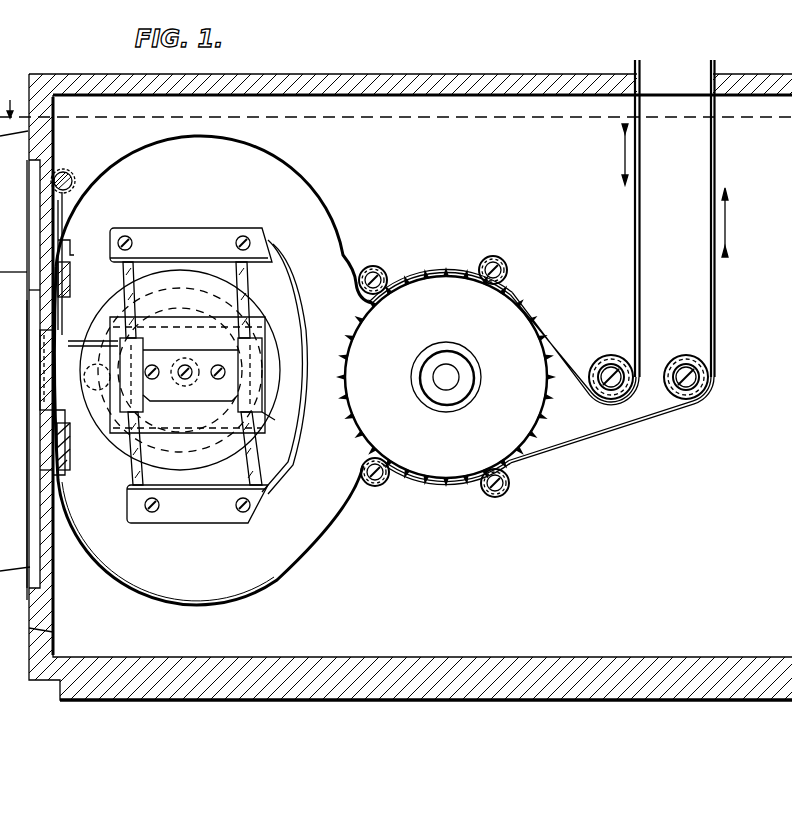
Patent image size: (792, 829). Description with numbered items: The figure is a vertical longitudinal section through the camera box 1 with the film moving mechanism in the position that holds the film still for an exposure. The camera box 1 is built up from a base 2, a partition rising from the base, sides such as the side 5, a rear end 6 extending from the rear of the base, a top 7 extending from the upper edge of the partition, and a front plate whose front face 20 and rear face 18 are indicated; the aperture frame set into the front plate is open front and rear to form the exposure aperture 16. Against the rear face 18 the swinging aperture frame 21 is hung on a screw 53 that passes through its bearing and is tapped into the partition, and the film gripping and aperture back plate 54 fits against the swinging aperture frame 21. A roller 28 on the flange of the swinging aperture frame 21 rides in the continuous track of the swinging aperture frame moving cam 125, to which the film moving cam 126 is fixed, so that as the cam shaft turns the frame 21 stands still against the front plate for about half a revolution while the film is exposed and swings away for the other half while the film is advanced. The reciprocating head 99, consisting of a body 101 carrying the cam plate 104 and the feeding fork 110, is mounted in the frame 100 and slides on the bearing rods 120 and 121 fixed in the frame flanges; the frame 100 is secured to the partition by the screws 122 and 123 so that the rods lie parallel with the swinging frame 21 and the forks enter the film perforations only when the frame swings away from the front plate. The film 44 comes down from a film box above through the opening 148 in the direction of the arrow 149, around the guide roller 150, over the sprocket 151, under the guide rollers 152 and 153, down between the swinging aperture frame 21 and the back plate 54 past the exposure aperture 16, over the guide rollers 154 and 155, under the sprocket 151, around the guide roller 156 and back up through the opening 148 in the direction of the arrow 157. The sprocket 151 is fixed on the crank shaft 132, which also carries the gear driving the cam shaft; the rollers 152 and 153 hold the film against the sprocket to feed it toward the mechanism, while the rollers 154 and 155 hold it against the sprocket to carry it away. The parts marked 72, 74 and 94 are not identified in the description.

The camera box 1 is at (366, 66).
The base 2 is at (416, 657).
The side 5 is at (13, 271).
The rear end 6 is at (791, 495).
The top 7 is at (530, 74).
The exposure aperture 16 is at (48, 370).
The rear face 18 is at (55, 609).
The front face 20 is at (40, 470).
The swinging aperture frame 21 is at (72, 207).
The roller 28 is at (93, 382).
The film 44 is at (346, 240).
The screw 53 is at (72, 176).
The film gripping and aperture back plate 54 is at (80, 250).
The strip 72 is at (45, 407).
The block 74 is at (40, 440).
The hinge 94 is at (30, 290).
The reciprocating head 99 is at (262, 326).
The frame 100 is at (218, 229).
The body 101 is at (226, 358).
The cam plate 104 is at (265, 312).
The feeding fork 110 is at (100, 320).
The bearing rod 120 is at (133, 480).
The bearing rod 121 is at (258, 478).
The screw 122 is at (250, 248).
The screw 123 is at (256, 506).
The swinging aperture frame moving cam 125 is at (275, 426).
The film moving cam 126 is at (172, 337).
The crank shaft 132 is at (455, 378).
The opening 148 is at (655, 74).
The arrow 149 is at (624, 155).
The guide roller 150 is at (605, 360).
The sprocket 151 is at (510, 322).
The guide roller 152 is at (383, 270).
The guide roller 153 is at (503, 266).
The guide roller 154 is at (386, 486).
The guide roller 155 is at (512, 488).
The guide roller 156 is at (685, 360).
The arrow 157 is at (727, 213).